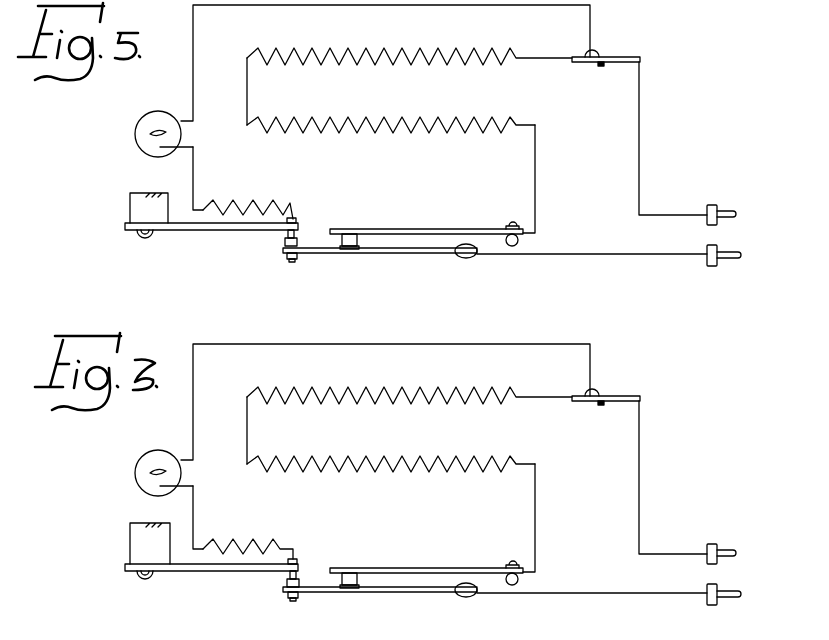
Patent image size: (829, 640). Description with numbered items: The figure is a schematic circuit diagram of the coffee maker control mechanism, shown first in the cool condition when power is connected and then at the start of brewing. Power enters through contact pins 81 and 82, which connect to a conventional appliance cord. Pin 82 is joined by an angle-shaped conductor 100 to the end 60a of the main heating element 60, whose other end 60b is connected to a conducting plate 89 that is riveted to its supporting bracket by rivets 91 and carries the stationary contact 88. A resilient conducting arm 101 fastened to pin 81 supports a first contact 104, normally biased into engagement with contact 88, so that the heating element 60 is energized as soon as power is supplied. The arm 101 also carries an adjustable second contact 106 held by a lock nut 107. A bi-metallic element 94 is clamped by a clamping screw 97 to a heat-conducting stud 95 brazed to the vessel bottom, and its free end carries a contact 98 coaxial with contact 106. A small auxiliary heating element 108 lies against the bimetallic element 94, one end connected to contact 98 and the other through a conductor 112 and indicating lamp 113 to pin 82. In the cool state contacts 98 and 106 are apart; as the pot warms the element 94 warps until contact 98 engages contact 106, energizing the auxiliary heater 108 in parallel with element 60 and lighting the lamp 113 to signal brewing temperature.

In FIG. 5, the main heating element 60 is at (381, 133).
In FIG. 6, the main heating element 60 is at (391, 481).
In FIG. 5, the end of the heating element 60a is at (557, 60).
In FIG. 6, the end of the heating element 60a is at (409, 415).
In FIG. 5, the end of the heating element 60b is at (536, 166).
In FIG. 6, the end of the heating element 60b is at (557, 518).
In FIG. 5, the contact pin 81 is at (728, 260).
In FIG. 6, the contact pin 81 is at (726, 611).
In FIG. 5, the contact pin 82 is at (728, 211).
In FIG. 6, the contact pin 82 is at (729, 540).
In FIG. 5, the stationary contact 88 is at (349, 243).
In FIG. 6, the stationary contact 88 is at (357, 556).
In FIG. 5, the conducting plate 89 is at (418, 229).
In FIG. 6, the conducting plate 89 is at (426, 550).
In FIG. 5, the rivets 91 is at (518, 244).
In FIG. 6, the rivets 91 is at (538, 573).
In FIG. 5, the bi-metallic element 94 is at (226, 231).
In FIG. 6, the bi-metallic element 94 is at (211, 585).
In FIG. 5, the stud 95 is at (130, 205).
In FIG. 6, the stud 95 is at (122, 543).
In FIG. 5, the clamping screw 97 is at (145, 237).
In FIG. 6, the clamping screw 97 is at (140, 590).
In FIG. 5, the contact 98 is at (285, 233).
In FIG. 6, the contact 98 is at (267, 583).
In FIG. 5, the conductor 100 is at (590, 63).
In FIG. 6, the conductor 100 is at (606, 423).
In FIG. 5, the conducting arm 101 is at (420, 253).
In FIG. 6, the conducting arm 101 is at (380, 605).
In FIG. 5, the first contact 104 is at (347, 251).
In FIG. 6, the first contact 104 is at (365, 605).
In FIG. 5, the second contact 106 is at (282, 247).
In FIG. 6, the second contact 106 is at (267, 599).
In FIG. 5, the lock nut 107 is at (294, 258).
In FIG. 6, the lock nut 107 is at (312, 607).
In FIG. 5, the auxiliary heating element 108 is at (247, 203).
In FIG. 6, the auxiliary heating element 108 is at (250, 536).
In FIG. 5, the conductor 112 is at (202, 153).
In FIG. 6, the conductor 112 is at (216, 517).
In FIG. 5, the indicating lamp 113 is at (137, 120).
In FIG. 6, the indicating lamp 113 is at (138, 470).